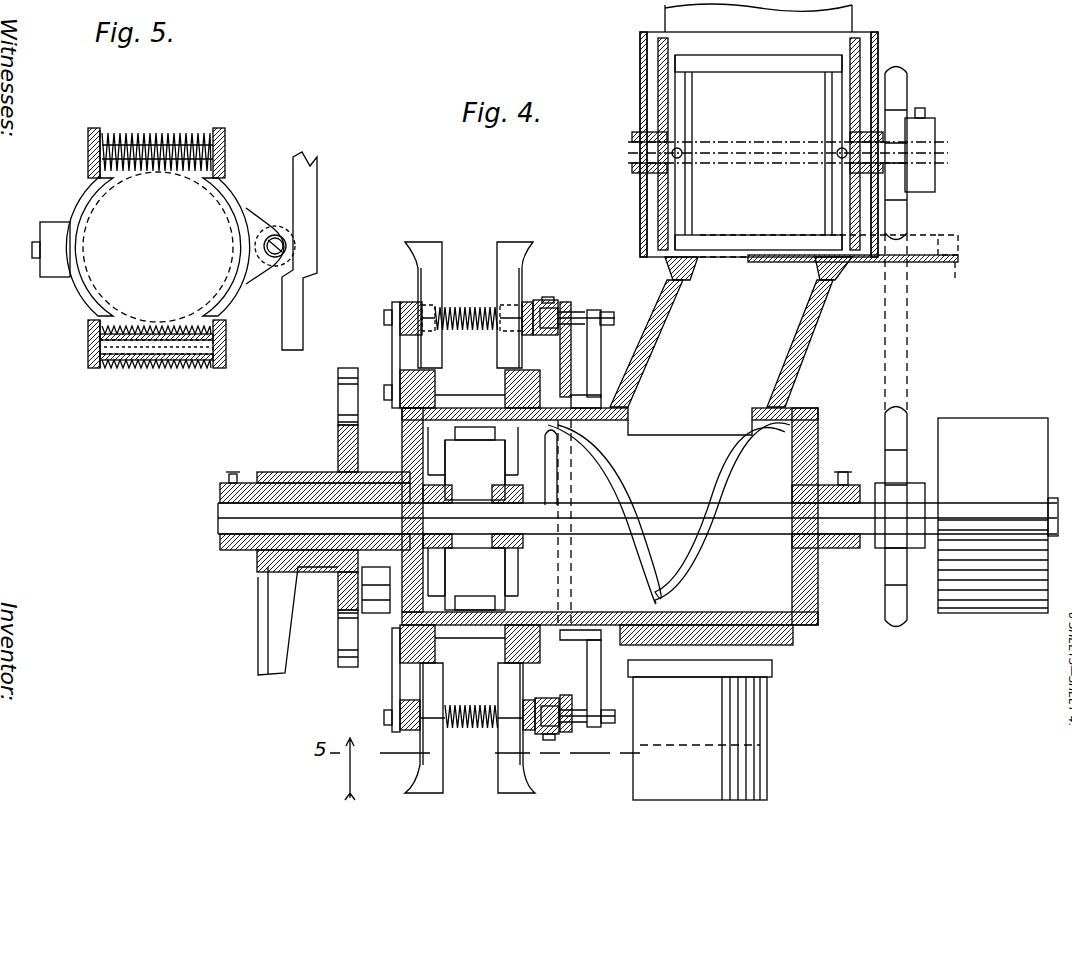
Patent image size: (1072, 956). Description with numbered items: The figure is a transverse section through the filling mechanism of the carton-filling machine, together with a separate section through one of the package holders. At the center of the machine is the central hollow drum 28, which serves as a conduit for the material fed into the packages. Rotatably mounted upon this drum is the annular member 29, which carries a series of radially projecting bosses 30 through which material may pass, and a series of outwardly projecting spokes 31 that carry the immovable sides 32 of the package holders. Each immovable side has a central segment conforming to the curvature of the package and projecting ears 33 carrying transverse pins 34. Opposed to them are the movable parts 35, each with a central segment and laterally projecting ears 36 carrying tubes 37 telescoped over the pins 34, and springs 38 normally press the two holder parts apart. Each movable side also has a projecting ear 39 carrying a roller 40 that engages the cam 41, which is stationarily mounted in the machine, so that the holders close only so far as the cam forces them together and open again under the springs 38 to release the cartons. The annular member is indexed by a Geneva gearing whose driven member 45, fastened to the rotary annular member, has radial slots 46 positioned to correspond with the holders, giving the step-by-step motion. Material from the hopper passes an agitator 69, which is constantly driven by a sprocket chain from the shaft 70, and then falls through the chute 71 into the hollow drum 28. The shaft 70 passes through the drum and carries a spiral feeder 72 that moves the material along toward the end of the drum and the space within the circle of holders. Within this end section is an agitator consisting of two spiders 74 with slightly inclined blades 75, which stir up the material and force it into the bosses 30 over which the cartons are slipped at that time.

In FIG. 4, the central hollow drum 28 is at (728, 612).
In FIG. 4, the annular member 29 is at (560, 625).
In FIG. 4, the radially projecting bosses 30 is at (432, 385).
In FIG. 5, the outwardly projecting spokes 31 is at (47, 258).
In FIG. 4, the outwardly projecting spokes 31 is at (392, 350).
In FIG. 5, the immovable sides of the package holder 32 is at (82, 290).
In FIG. 4, the immovable sides of the package holder 32 is at (425, 248).
In FIG. 5, the projecting ears 33 is at (92, 160).
In FIG. 4, the projecting ears 33 is at (411, 516).
In FIG. 5, the transverse pins 34 is at (108, 145).
In FIG. 5, the movable parts of the package holders 35 is at (232, 288).
In FIG. 4, the movable parts of the package holders 35 is at (513, 248).
In FIG. 5, the laterally projecting ears 36 is at (222, 142).
In FIG. 4, the laterally projecting ears 36 is at (528, 516).
In FIG. 5, the tubes 37 is at (180, 140).
In FIG. 4, the tubes 37 is at (470, 311).
In FIG. 5, the springs 38 is at (150, 145).
In FIG. 4, the springs 38 is at (450, 310).
In FIG. 5, the projecting ear 39 is at (258, 228).
In FIG. 4, the projecting ear 39 is at (536, 324).
In FIG. 5, the roller 40 is at (290, 244).
In FIG. 4, the roller 40 is at (548, 300).
In FIG. 5, the cam 41 is at (312, 185).
In FIG. 4, the cam 41 is at (566, 305).
In FIG. 4, the Geneva gearing member 45 is at (338, 450).
In FIG. 4, the radial slots 46 is at (340, 416).
In FIG. 4, the agitator 69 is at (830, 193).
In FIG. 4, the shaft 70 is at (835, 545).
In FIG. 4, the chute 71 is at (721, 357).
In FIG. 4, the spiral feeder 72 is at (728, 476).
In FIG. 4, the spiders 74 is at (445, 540).
In FIG. 4, the slightly inclined blades 75 is at (493, 442).